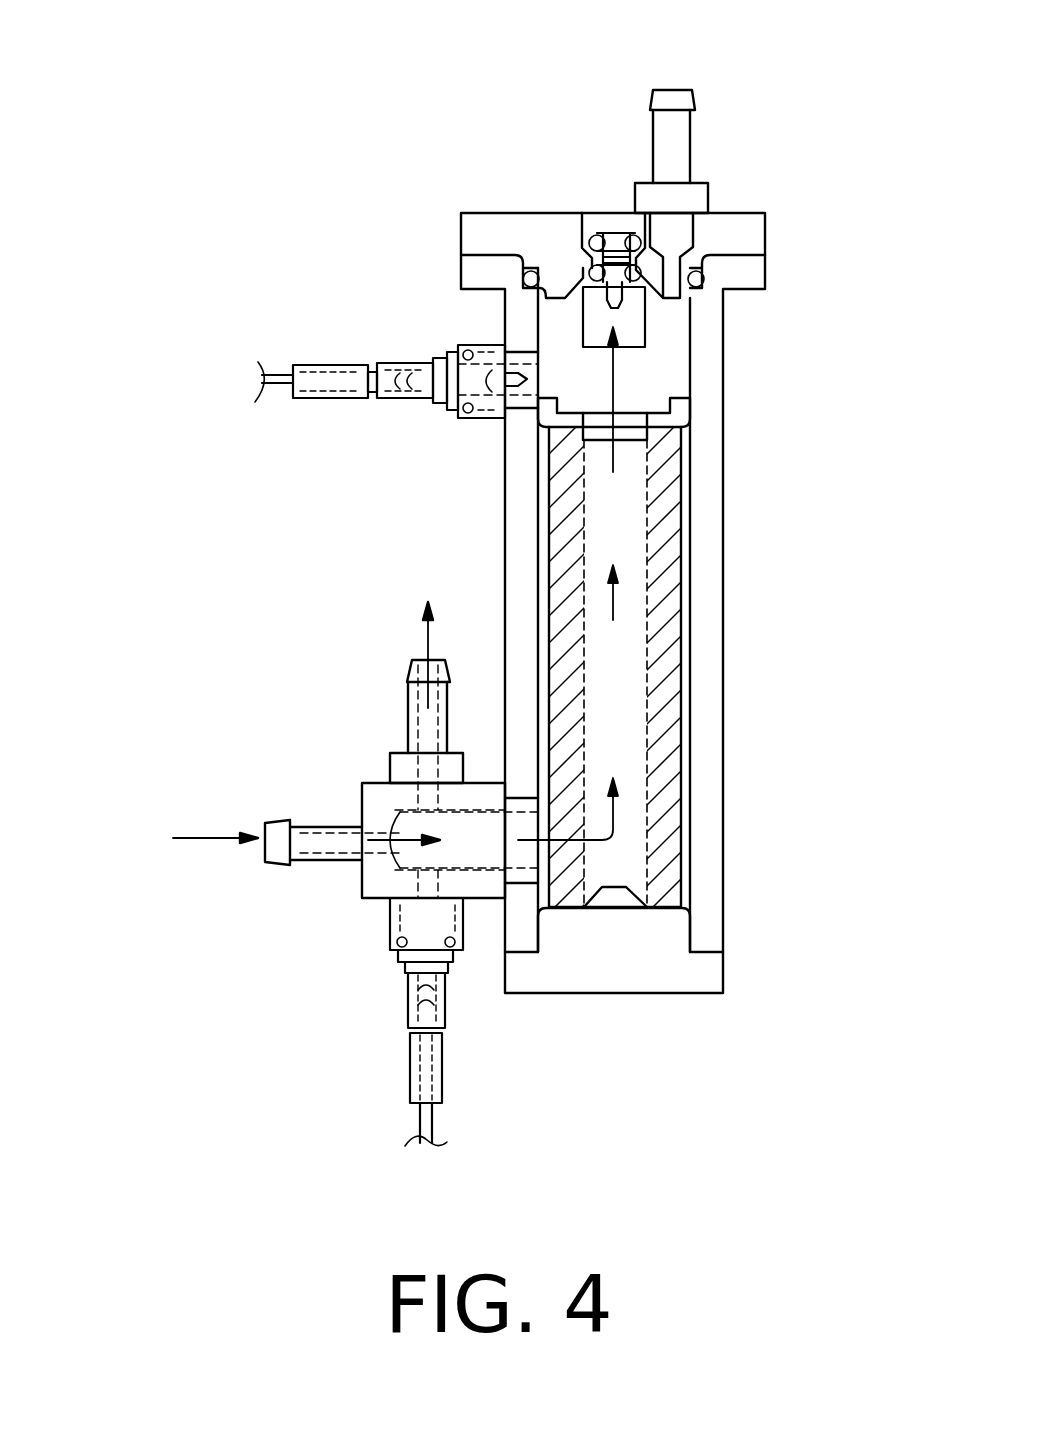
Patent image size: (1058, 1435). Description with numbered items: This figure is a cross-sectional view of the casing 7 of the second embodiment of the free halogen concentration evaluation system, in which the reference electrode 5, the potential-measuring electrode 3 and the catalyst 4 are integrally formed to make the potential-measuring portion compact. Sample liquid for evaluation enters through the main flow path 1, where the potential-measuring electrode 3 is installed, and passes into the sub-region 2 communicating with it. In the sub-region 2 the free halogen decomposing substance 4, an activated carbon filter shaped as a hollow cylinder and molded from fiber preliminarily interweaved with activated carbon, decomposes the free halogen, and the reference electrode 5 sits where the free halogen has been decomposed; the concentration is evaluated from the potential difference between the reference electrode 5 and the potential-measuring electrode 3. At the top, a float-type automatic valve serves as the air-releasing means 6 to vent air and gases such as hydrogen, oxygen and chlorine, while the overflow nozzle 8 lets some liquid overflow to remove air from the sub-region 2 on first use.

The main flow path 1 is at (205, 838).
The sub-region 2 is at (618, 510).
The potential-measuring electrode 3 is at (412, 1117).
The free halogen decomposing substance 4 is at (563, 703).
The reference electrode 5 is at (482, 378).
The air-releasing means 6 is at (613, 233).
The casing 7 is at (713, 617).
The overflow nozzle 8 is at (670, 97).